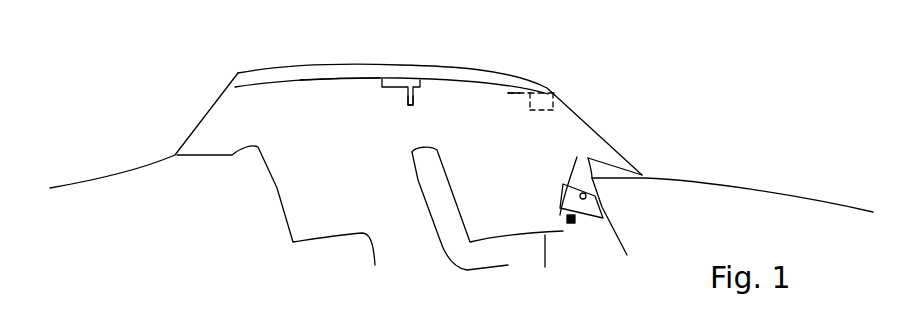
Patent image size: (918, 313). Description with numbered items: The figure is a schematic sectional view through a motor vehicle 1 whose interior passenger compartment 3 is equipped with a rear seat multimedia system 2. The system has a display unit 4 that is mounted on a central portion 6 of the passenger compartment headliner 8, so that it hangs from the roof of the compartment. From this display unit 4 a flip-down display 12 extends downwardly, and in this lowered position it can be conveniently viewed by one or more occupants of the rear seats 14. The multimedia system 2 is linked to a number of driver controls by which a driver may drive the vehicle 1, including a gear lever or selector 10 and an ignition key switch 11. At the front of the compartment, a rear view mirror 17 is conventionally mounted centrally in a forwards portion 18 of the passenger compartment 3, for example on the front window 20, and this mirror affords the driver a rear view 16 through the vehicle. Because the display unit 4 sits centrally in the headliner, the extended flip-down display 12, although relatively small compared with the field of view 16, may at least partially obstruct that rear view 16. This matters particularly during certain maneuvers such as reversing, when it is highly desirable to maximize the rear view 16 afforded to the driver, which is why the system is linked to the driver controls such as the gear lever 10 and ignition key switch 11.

The motor vehicle 1 is at (742, 92).
The rear seat multimedia system 2 is at (419, 64).
The passenger compartment 3 is at (377, 185).
The display unit 4 is at (390, 76).
The central portion 6 is at (364, 90).
The passenger compartment headliner 8 is at (482, 78).
The gear lever 10 is at (570, 223).
The ignition key switch 11 is at (597, 200).
The flip-down display 12 is at (414, 97).
The rear seats 14 is at (278, 188).
The rear view 16 is at (525, 112).
The rear view mirror 17 is at (556, 105).
The forwards portion 18 is at (515, 105).
The front window 20 is at (583, 113).